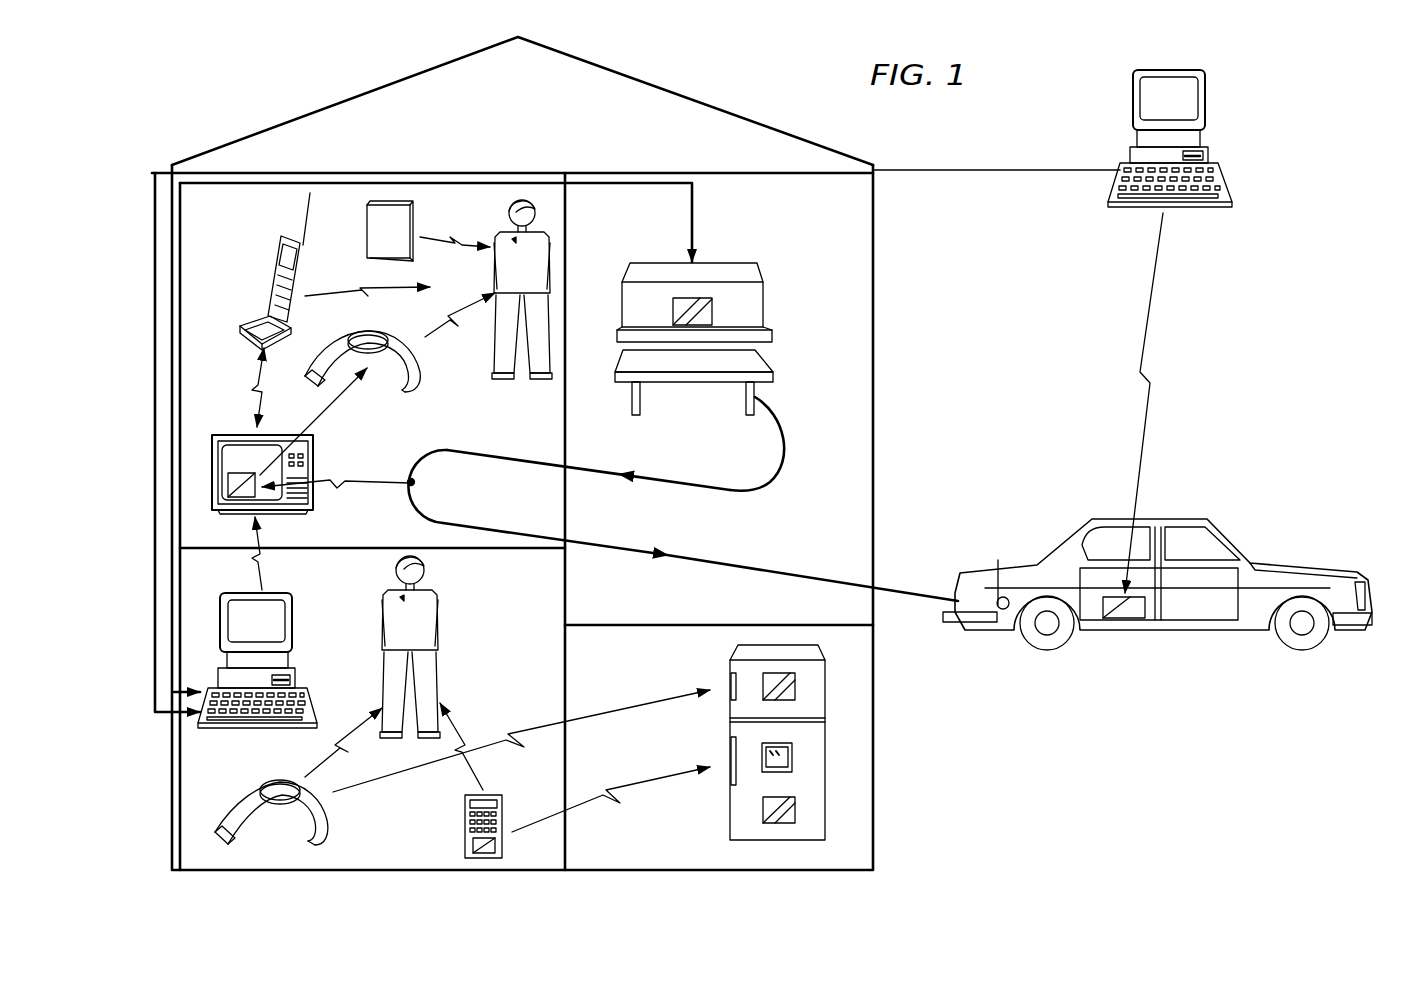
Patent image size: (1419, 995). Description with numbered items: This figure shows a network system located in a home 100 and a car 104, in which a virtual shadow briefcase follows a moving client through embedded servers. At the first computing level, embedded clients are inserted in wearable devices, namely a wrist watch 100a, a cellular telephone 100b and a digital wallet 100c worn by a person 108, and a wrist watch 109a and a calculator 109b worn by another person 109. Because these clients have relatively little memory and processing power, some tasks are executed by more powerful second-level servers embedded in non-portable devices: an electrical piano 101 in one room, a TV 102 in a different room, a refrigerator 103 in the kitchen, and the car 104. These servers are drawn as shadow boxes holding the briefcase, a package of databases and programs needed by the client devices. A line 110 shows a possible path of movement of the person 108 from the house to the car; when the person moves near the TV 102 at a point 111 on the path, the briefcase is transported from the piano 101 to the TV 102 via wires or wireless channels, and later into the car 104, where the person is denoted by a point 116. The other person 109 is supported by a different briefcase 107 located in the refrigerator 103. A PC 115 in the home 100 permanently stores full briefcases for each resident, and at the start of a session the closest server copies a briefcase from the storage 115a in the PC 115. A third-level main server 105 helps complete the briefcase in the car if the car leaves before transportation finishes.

The home 100 is at (873, 830).
The wrist watch 100a is at (418, 388).
The cellular telephone 100b is at (262, 312).
The digital wallet 100c is at (413, 226).
The electrical piano 101 is at (707, 339).
The TV 102 is at (278, 491).
The refrigerator 103 is at (769, 750).
The car 104 is at (1157, 615).
The main server 105 is at (1207, 113).
The briefcase 107 is at (763, 800).
The person 108 is at (497, 262).
The another person 109 is at (435, 612).
The wrist watch 109a is at (252, 780).
The calculator 109b is at (465, 840).
The line 110 is at (487, 453).
The point 111 is at (411, 482).
The PC 115 is at (293, 633).
The briefcase storage 115a is at (268, 727).
The point 116 is at (998, 562).